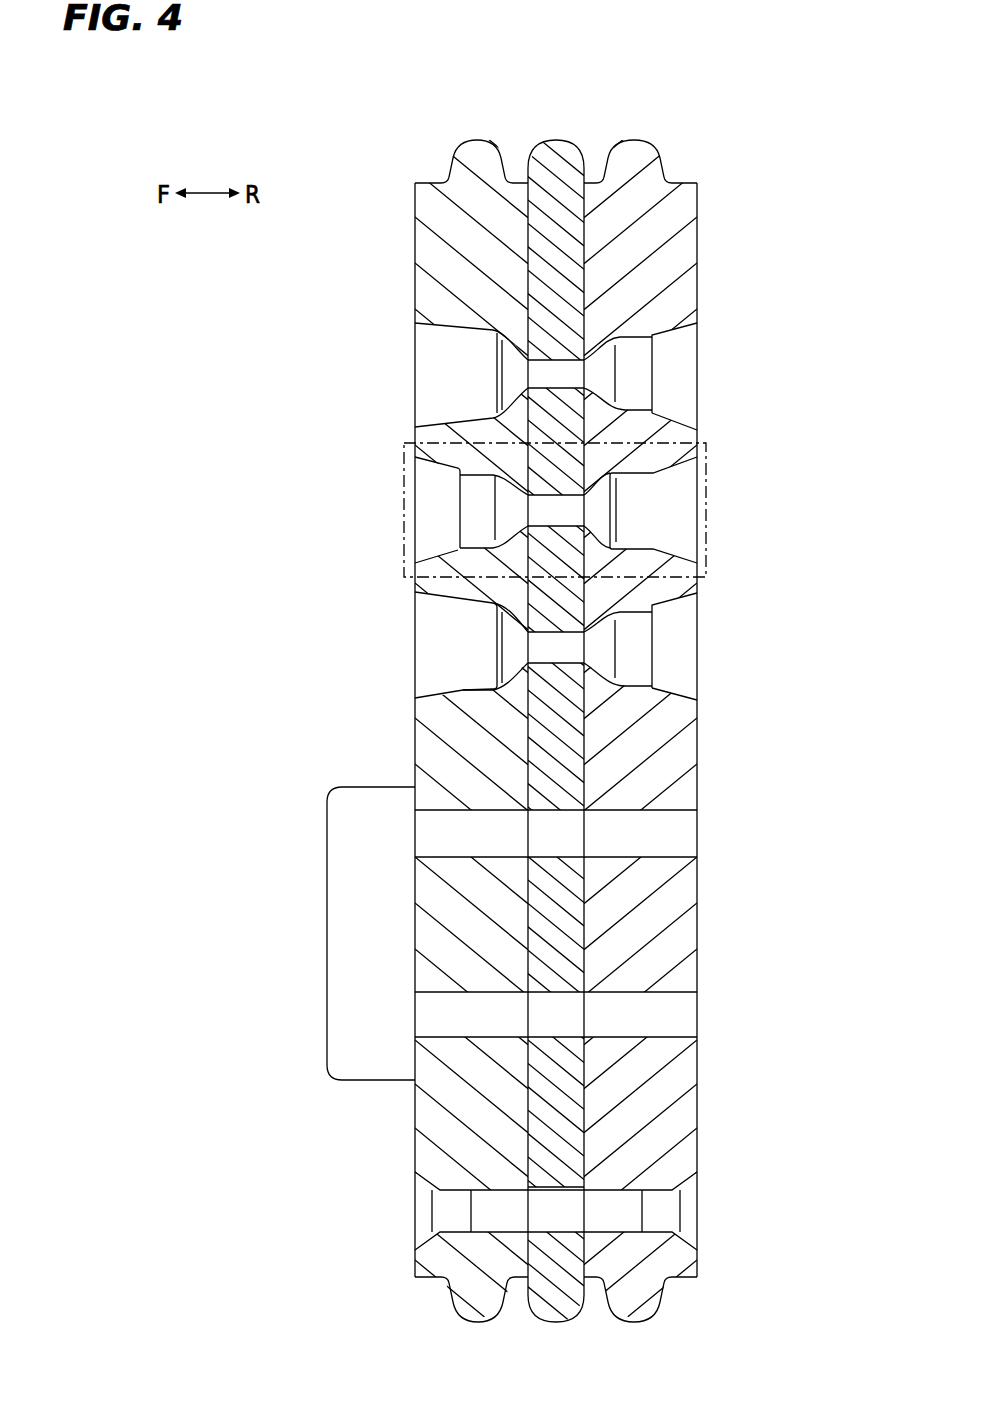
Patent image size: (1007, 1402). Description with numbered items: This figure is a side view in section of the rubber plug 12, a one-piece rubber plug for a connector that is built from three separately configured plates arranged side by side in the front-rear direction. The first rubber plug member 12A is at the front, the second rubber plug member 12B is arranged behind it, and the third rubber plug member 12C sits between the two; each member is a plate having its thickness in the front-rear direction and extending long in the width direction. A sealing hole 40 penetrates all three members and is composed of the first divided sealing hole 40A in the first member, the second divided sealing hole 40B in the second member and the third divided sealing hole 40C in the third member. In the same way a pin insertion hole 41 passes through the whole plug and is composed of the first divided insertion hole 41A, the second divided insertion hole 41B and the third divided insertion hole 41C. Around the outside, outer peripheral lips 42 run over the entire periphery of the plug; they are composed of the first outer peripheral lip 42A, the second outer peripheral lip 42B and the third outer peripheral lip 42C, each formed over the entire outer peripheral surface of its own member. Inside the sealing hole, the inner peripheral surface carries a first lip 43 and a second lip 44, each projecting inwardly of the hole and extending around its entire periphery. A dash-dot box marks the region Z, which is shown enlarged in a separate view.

The rubber plug 12 is at (322, 240).
The first rubber plug member 12A is at (425, 248).
The second rubber plug member 12B is at (608, 313).
The third rubber plug member 12C is at (548, 277).
The sealing hole 40 is at (322, 443).
The first divided sealing hole 40A is at (472, 476).
The second divided sealing hole 40B is at (649, 462).
The third divided sealing hole 40C is at (556, 497).
The pin insertion hole 41 is at (236, 808).
The first divided insertion hole 41A is at (443, 812).
The second divided insertion hole 41B is at (617, 813).
The third divided insertion hole 41C is at (553, 810).
The outer peripheral lips 42 is at (645, 94).
The first outer peripheral lip 42A is at (480, 150).
The second outer peripheral lip 42B is at (633, 148).
The third outer peripheral lip 42C is at (560, 147).
The first lip 43 is at (518, 625).
The second lip 44 is at (597, 627).
The region Z is at (706, 489).